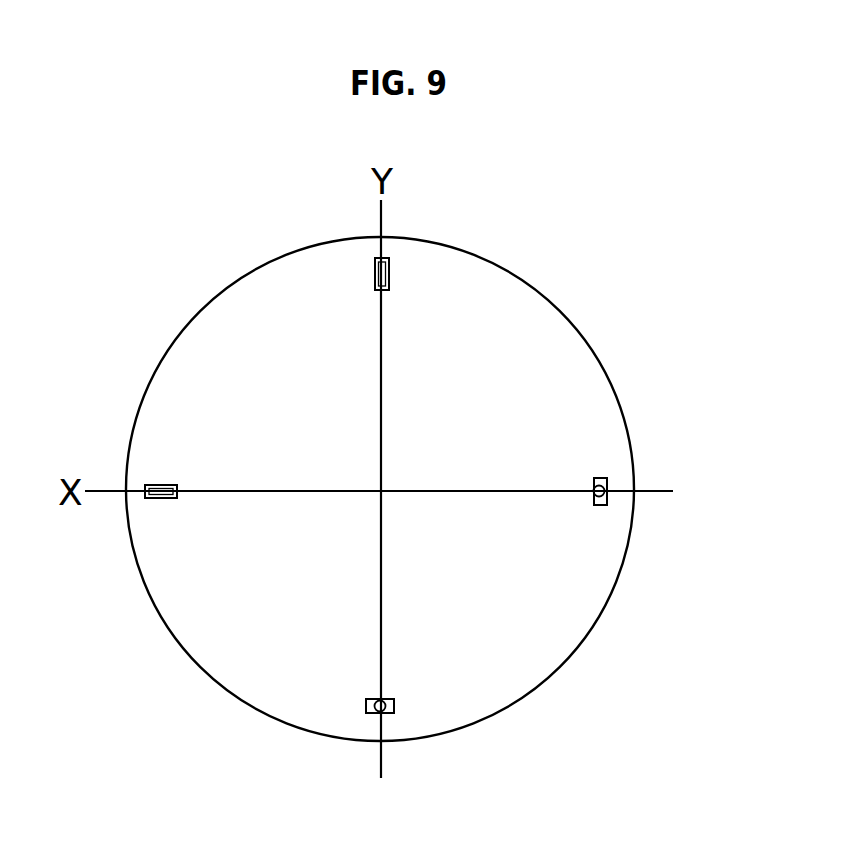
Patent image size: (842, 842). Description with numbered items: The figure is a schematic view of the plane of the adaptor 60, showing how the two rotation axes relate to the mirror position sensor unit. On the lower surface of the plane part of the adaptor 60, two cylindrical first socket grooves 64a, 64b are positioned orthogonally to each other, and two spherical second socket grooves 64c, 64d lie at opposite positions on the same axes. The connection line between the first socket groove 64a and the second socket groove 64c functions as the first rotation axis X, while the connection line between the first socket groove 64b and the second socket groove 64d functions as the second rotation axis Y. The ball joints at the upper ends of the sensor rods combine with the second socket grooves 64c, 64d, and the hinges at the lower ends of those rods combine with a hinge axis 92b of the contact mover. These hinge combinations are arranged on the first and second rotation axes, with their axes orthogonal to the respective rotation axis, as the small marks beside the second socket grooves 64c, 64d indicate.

The adaptor 60 is at (570, 318).
The first socket groove 64a is at (160, 485).
The first socket groove 64b is at (389, 274).
The second socket groove 64c is at (606, 497).
The second socket groove 64d is at (374, 712).
The hinge axis 92b is at (601, 478).